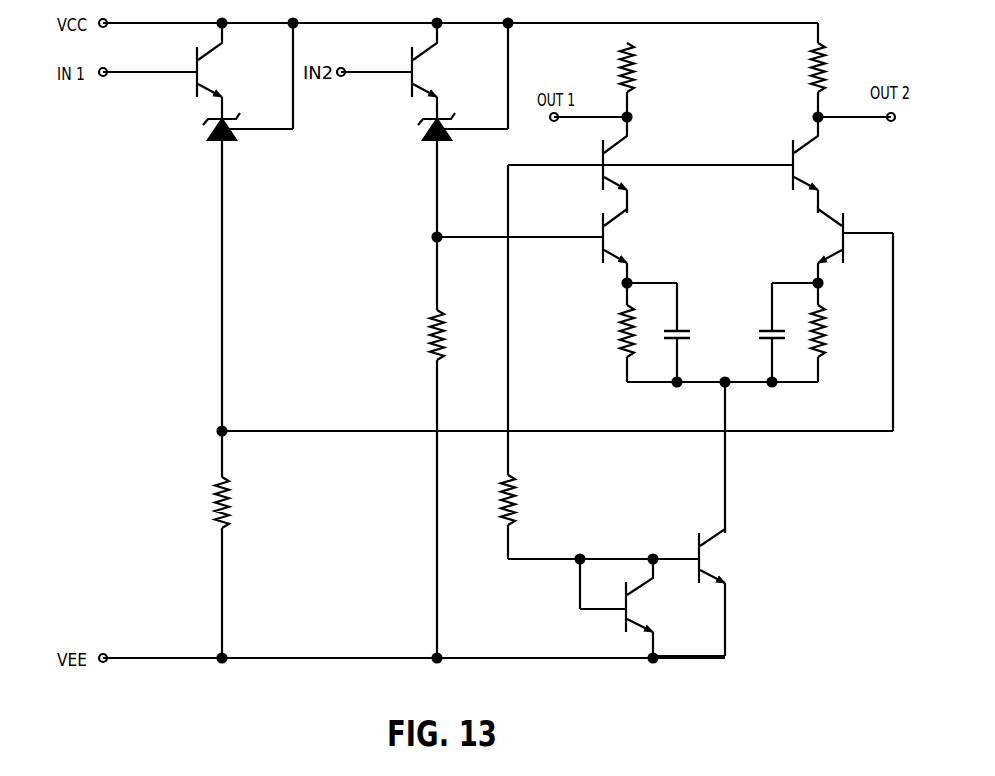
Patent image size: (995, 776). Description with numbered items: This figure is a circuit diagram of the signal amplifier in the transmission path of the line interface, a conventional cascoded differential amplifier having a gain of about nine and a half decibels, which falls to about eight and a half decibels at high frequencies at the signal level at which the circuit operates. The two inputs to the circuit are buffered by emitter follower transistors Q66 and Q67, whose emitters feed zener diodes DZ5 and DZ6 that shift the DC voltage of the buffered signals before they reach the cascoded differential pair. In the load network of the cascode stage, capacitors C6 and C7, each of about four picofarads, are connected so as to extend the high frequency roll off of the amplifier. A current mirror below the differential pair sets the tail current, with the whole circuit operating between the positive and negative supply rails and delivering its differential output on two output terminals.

The emitter follower transistor Q66 is at (224, 66).
The emitter follower transistor Q67 is at (439, 66).
The zener diode DZ5 is at (239, 136).
The zener diode DZ6 is at (417, 136).
The capacitor C6 is at (688, 332).
The capacitor C7 is at (762, 332).